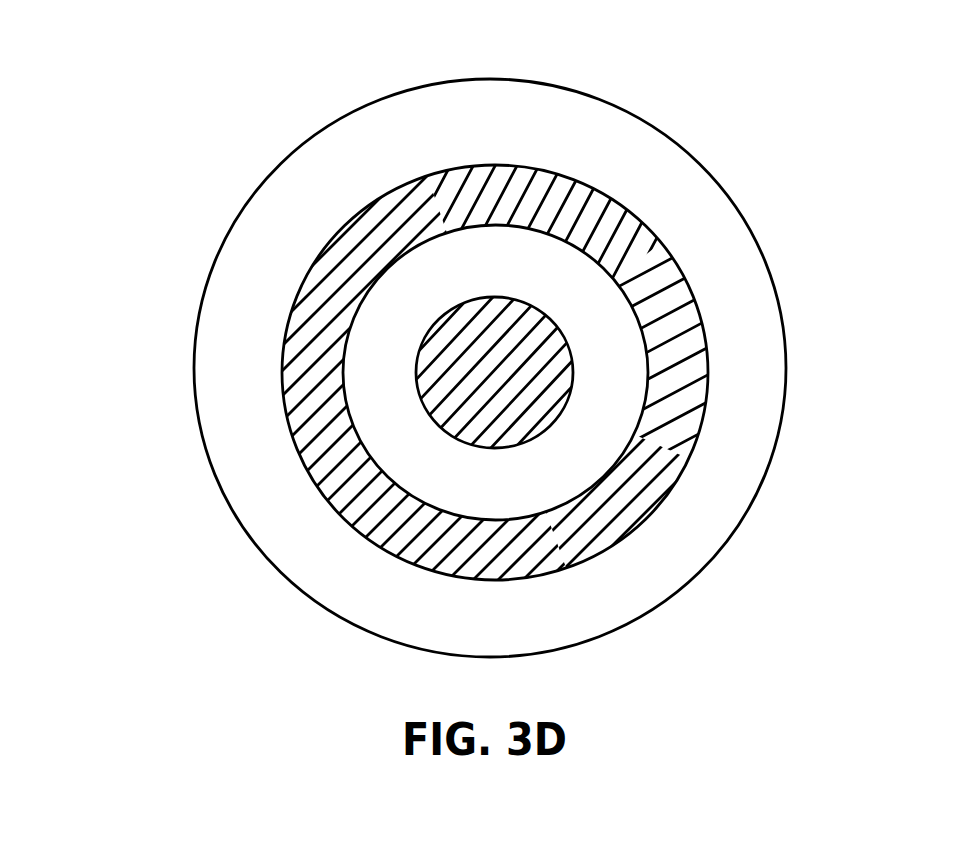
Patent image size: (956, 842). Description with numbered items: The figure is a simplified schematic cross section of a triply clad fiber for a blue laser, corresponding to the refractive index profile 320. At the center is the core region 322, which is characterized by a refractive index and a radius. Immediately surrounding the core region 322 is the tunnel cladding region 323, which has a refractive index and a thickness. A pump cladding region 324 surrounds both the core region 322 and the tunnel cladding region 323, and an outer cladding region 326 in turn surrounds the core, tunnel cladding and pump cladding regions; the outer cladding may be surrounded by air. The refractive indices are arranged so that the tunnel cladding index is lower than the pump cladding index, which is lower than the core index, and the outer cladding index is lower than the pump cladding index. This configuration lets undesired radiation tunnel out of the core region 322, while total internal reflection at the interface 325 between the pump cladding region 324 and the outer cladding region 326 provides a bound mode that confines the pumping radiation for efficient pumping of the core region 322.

The refractive index profile 320 is at (478, 355).
The core region 322 is at (521, 390).
The tunnel cladding region 323 is at (470, 491).
The pump cladding region 324 is at (648, 475).
The interface 325 is at (705, 420).
The outer cladding region 326 is at (471, 627).